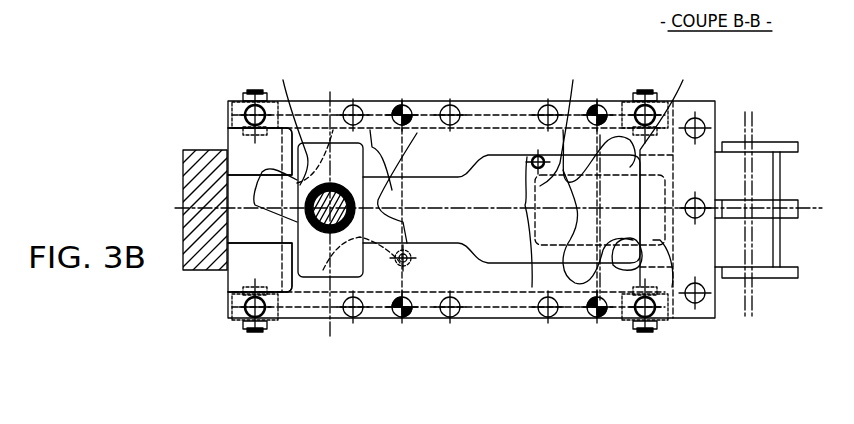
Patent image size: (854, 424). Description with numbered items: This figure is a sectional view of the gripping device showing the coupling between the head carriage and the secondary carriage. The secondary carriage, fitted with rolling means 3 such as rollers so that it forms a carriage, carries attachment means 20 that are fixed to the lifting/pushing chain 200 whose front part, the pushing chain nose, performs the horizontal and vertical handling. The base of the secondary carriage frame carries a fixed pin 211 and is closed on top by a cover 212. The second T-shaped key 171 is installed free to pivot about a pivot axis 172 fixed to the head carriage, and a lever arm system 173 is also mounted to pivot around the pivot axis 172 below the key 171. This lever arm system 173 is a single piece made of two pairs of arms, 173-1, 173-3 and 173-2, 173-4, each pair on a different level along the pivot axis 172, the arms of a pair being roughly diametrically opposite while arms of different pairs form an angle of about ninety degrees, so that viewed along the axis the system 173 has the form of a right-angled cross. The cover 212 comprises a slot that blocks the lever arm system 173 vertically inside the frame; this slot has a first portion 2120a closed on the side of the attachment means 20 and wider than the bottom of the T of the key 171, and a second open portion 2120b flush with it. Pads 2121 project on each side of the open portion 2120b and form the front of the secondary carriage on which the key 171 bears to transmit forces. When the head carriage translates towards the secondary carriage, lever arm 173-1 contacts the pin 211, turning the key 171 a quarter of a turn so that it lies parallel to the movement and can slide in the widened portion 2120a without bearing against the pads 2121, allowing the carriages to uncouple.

The rolling means 3 is at (240, 99).
The attachment means 20 is at (758, 183).
The second T-shaped key 171 is at (284, 80).
The pivot axis 172 is at (331, 182).
The lever arm system 173 is at (322, 279).
The lever arm 173-1 is at (370, 130).
The lever arm 173-2 is at (417, 133).
The lever arm 173-3 is at (640, 228).
The lever arm 173-4 is at (255, 190).
The lifting/pushing chain 200 is at (748, 142).
The pin 211 is at (536, 156).
The cover 212 is at (492, 104).
The first portion of the slot 2120a is at (497, 266).
The second portion of the slot 2120b is at (430, 250).
The pads 2121 is at (250, 143).